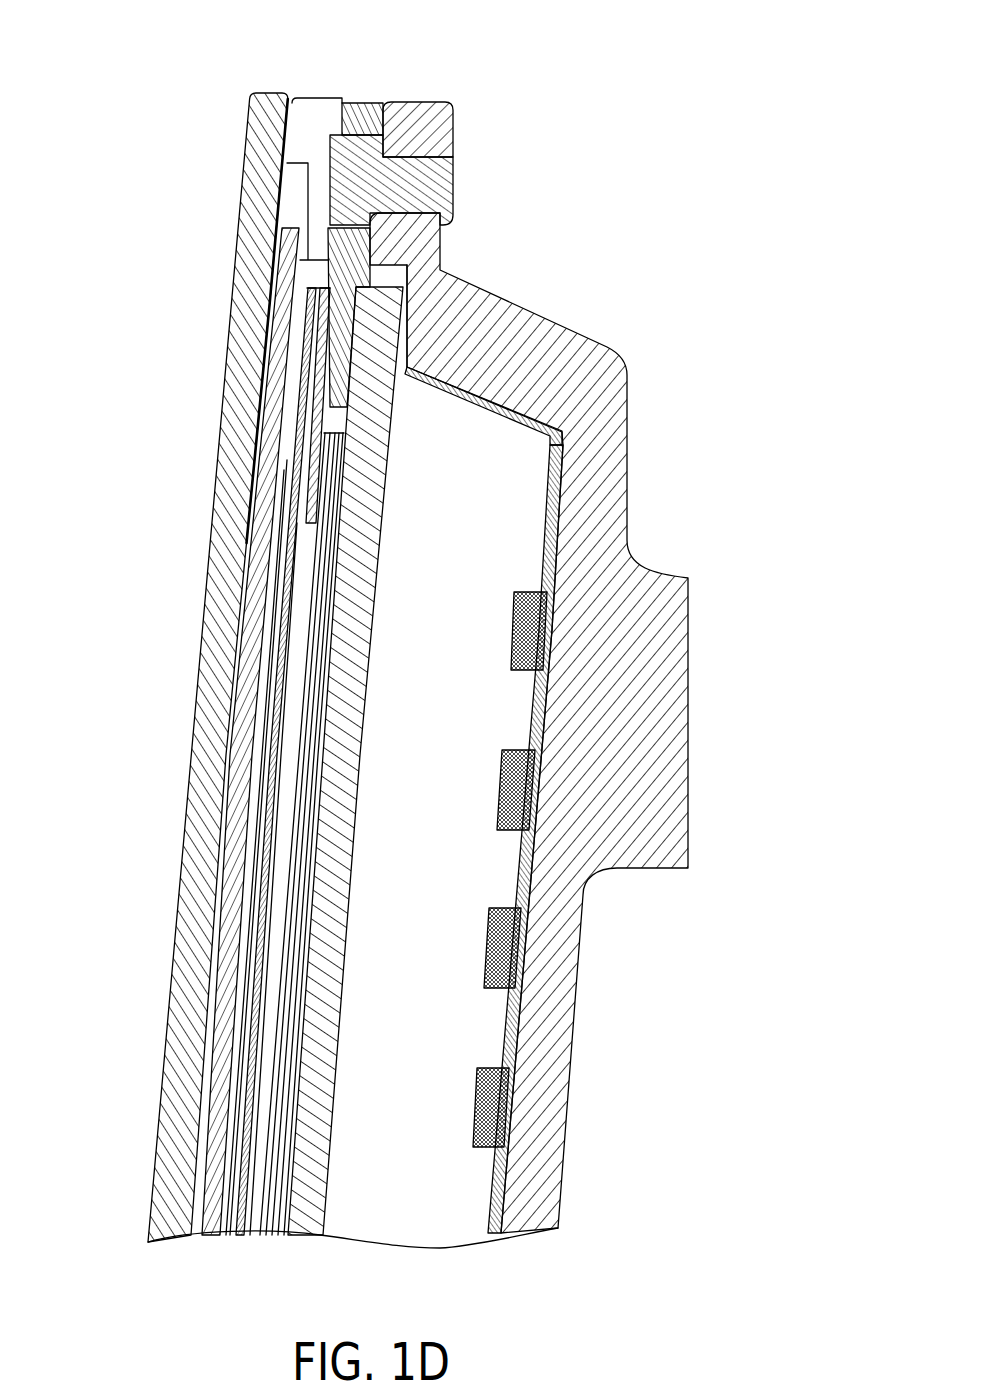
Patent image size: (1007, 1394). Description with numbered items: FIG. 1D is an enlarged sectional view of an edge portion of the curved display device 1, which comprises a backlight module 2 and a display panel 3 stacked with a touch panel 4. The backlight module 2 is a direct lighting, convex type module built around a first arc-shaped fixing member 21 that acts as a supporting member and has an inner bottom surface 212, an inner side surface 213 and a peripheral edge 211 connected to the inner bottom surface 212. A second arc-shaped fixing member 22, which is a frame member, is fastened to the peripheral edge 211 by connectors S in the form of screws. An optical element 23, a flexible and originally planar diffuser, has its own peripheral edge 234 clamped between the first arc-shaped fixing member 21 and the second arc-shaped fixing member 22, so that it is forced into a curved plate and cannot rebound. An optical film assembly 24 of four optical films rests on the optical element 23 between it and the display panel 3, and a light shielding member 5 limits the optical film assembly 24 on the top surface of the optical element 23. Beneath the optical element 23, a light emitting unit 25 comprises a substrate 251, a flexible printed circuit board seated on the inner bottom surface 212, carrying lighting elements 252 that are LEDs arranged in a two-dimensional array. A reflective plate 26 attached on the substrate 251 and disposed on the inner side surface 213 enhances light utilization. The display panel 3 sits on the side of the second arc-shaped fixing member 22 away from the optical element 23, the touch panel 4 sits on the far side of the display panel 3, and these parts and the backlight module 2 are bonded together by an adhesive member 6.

The display device 1 is at (142, 30).
The backlight module 2 is at (497, 278).
The first arc-shaped fixing member 21 is at (700, 615).
The peripheral edge 211 is at (453, 128).
The inner bottom surface 212 is at (578, 449).
The inner side surface 213 is at (548, 425).
The second arc-shaped fixing member 22 is at (361, 92).
The optical element 23 is at (396, 458).
The optical film assembly 24 is at (350, 511).
The light emitting unit 25 is at (447, 607).
The substrate 251 is at (539, 702).
The lighting elements 252 is at (519, 634).
The reflective plate 26 is at (550, 424).
The peripheral edge 234 is at (383, 326).
The display panel 3 is at (250, 569).
The touch panel 4 is at (277, 80).
The light shielding member 5 is at (317, 436).
The adhesive member 6 is at (284, 354).
The connectors S is at (454, 181).